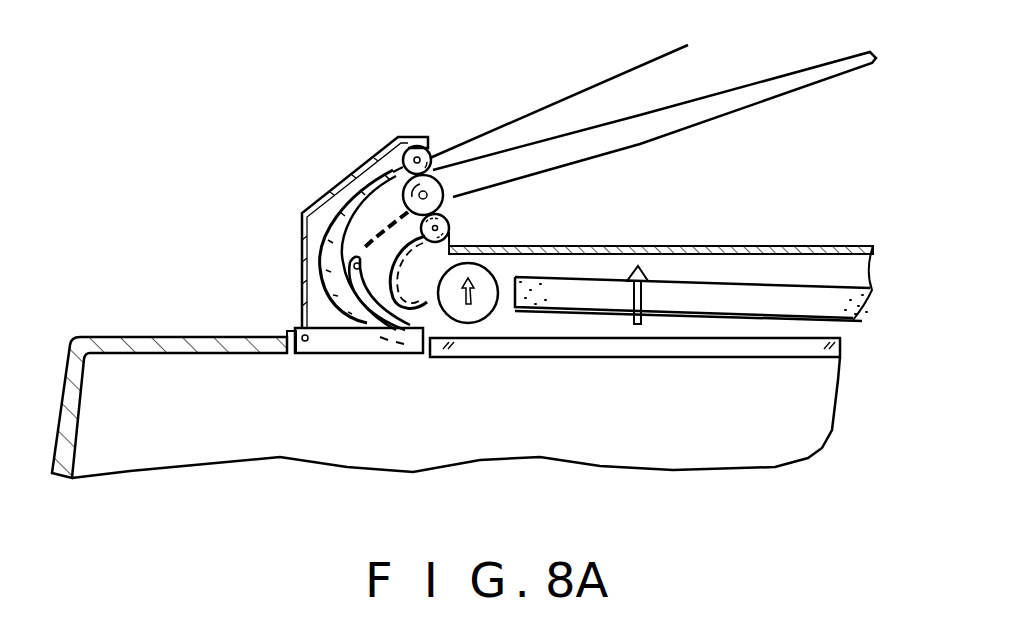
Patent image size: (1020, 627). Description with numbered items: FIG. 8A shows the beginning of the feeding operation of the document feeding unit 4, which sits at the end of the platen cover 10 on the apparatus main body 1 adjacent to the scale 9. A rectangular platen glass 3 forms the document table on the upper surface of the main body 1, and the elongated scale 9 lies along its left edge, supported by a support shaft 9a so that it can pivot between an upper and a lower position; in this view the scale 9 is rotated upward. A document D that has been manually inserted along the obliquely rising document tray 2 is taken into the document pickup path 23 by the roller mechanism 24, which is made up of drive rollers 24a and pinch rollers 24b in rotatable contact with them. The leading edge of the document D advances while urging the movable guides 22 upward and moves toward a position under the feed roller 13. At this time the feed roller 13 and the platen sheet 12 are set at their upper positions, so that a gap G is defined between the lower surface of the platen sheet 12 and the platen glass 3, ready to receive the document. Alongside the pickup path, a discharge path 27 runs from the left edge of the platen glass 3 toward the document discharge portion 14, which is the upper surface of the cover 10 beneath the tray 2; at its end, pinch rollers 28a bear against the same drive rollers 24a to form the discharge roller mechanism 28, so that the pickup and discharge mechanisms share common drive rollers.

The apparatus main body 1 is at (158, 326).
The document tray 2 is at (790, 70).
The platen glass 3 is at (596, 348).
The document feeding unit 4 is at (385, 98).
The scale 9 is at (360, 342).
The support shaft 9a is at (302, 344).
The platen cover 10 is at (826, 245).
The platen sheet 12 is at (735, 310).
The feed roller 13 is at (470, 314).
The document discharge portion 14 is at (690, 197).
The movable guides 22 is at (365, 292).
The document pickup path 23 is at (352, 218).
The roller mechanism 24 is at (491, 134).
The drive rollers 24a is at (447, 188).
The pinch rollers 24b is at (410, 140).
The discharge path 27 is at (395, 236).
The discharge roller mechanism 28 is at (447, 212).
The pinch rollers 28a is at (452, 228).
The document D is at (620, 72).
The gap G is at (663, 328).